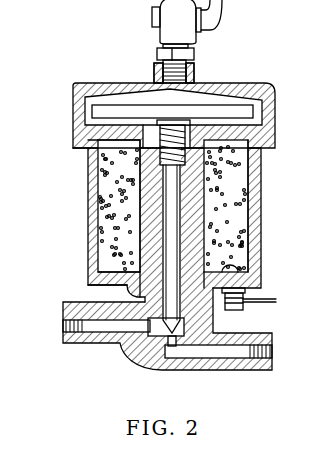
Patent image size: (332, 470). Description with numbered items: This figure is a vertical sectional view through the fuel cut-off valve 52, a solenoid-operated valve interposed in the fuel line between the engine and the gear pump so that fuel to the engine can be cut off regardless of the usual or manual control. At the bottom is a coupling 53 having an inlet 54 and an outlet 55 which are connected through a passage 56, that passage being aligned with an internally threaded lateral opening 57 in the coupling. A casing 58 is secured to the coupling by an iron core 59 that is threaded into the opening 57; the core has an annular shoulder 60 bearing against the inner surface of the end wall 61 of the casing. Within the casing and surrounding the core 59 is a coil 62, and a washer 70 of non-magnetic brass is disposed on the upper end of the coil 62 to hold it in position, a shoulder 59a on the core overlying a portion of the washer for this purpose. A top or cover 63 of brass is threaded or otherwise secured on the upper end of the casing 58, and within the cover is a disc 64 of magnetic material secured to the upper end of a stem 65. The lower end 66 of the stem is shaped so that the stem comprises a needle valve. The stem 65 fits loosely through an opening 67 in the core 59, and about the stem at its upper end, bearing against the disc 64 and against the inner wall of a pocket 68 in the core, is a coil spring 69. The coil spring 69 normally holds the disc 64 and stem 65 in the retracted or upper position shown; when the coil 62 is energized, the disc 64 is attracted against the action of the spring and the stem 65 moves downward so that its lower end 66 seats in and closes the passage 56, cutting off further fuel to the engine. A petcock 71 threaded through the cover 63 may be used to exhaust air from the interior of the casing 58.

The fuel cut-off valve 52 is at (267, 221).
The coupling 53 is at (135, 348).
The inlet 54 is at (230, 352).
The outlet 55 is at (63, 330).
The passage 56 is at (170, 338).
The internally threaded lateral opening 57 is at (130, 297).
The casing 58 is at (87, 220).
The iron core 59 is at (155, 228).
The shoulder 59a is at (142, 125).
The annular shoulder 60 is at (247, 248).
The end wall 61 is at (88, 272).
The coil 62 is at (115, 188).
The cover 63 is at (273, 103).
The disc 64 is at (233, 112).
The stem 65 is at (175, 205).
The lower end 66 is at (212, 332).
The opening 67 is at (257, 177).
The pocket 68 is at (160, 152).
The coil spring 69 is at (188, 124).
The washer 70 is at (88, 131).
The petcock 71 is at (170, 27).